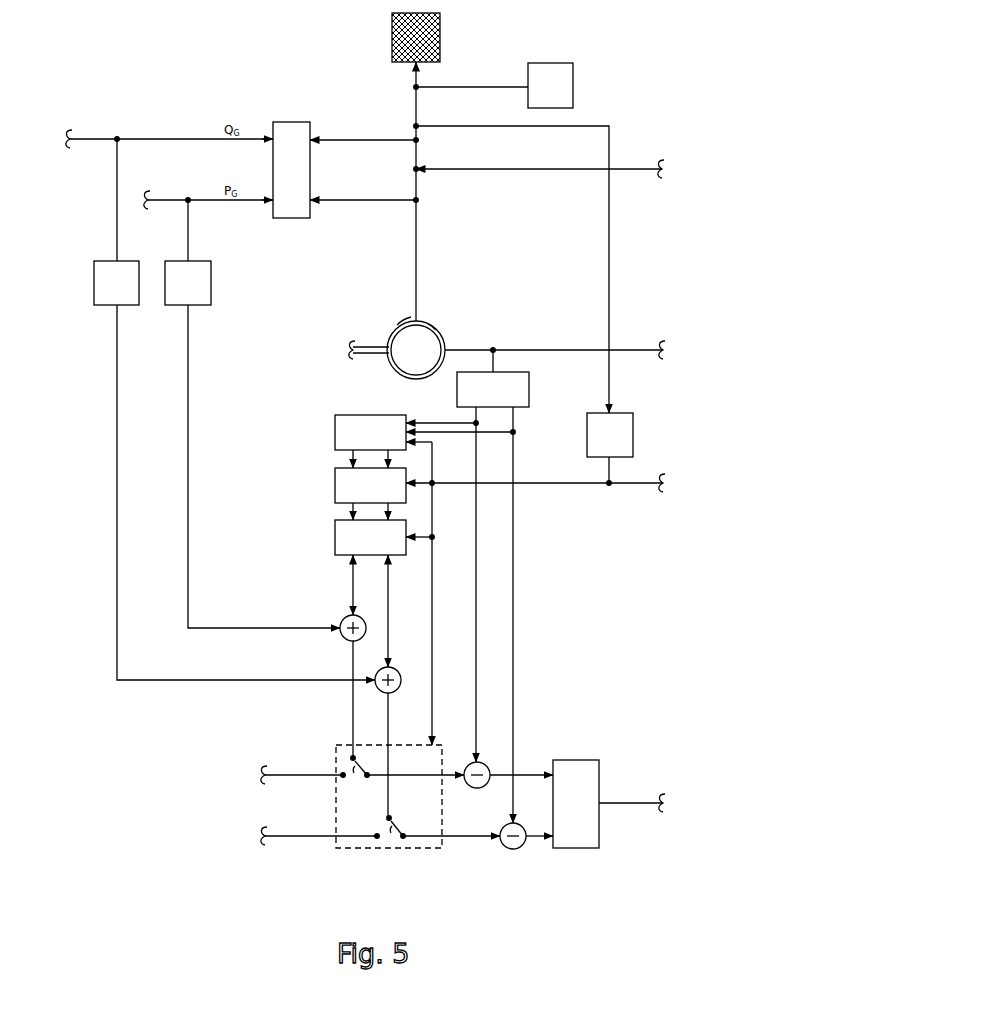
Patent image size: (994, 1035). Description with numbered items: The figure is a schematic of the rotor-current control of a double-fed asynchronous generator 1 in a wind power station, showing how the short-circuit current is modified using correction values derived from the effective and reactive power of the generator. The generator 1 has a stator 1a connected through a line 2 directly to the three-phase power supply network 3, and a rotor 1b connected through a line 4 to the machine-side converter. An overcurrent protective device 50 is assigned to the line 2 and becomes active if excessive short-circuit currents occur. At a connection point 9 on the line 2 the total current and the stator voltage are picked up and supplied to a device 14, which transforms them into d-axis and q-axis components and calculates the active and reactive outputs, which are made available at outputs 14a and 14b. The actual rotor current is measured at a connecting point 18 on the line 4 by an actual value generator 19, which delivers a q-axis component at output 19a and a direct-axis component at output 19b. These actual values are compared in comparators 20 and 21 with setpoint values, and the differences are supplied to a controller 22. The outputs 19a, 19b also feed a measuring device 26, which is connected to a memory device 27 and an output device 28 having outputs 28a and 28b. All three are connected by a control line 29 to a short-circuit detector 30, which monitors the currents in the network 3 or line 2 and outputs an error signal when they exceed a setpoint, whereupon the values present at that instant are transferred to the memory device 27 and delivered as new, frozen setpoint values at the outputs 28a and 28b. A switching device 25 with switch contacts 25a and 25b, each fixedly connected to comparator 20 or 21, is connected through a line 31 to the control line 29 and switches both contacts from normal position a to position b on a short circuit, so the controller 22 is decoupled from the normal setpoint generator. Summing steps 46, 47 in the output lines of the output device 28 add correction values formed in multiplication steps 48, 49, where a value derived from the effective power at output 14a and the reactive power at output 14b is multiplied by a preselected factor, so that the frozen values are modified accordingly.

The asynchronous generator 1 is at (397, 377).
The stator 1a is at (440, 328).
The rotor 1b is at (404, 325).
The line 2 is at (418, 245).
The power supply network 3 is at (440, 25).
The line 4 is at (566, 348).
The connection point 9 is at (420, 167).
The device 14 is at (299, 133).
The output 14a is at (270, 203).
The output 14b is at (272, 138).
The connecting point 18 is at (494, 348).
The actual value generator 19 is at (520, 380).
The output 19a is at (475, 408).
The output 19b is at (515, 410).
The comparator 20 is at (487, 765).
The comparator 21 is at (515, 849).
The controller 22 is at (576, 768).
The switching device 25 is at (355, 851).
The switch contact 25a is at (350, 762).
The switch contact 25b is at (400, 831).
The measuring device 26 is at (338, 437).
The memory device 27 is at (340, 482).
The output device 28 is at (345, 537).
The output 28a is at (345, 558).
The output 28b is at (415, 558).
The control line 29 is at (530, 484).
The short-circuit detector 30 is at (633, 440).
The line 31 is at (434, 475).
The summing step 46 is at (345, 617).
The summing step 47 is at (399, 659).
The multiplication step 48 is at (202, 269).
The multiplication step 49 is at (101, 268).
The overcurrent protective device 50 is at (570, 87).